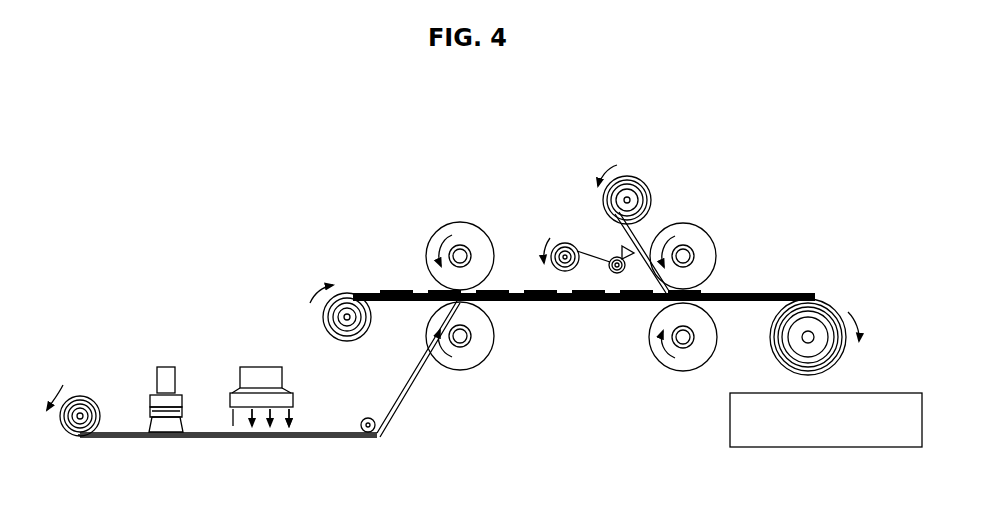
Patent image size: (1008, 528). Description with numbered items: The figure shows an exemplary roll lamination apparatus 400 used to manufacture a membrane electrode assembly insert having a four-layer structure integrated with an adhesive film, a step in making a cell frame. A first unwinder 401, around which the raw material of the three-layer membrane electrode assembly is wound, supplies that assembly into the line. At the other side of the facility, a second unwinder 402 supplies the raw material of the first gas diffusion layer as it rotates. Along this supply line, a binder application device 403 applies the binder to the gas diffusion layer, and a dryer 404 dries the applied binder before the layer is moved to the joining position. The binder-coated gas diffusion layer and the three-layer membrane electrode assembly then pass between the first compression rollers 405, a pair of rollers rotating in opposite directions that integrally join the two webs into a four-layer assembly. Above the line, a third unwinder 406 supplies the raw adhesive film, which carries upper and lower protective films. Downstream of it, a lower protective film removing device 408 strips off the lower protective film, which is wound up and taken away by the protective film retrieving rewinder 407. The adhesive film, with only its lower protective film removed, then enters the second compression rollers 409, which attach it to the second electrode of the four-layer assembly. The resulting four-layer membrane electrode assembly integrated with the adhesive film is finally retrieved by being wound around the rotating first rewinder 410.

The roll lamination apparatus 400 is at (195, 265).
The first unwinder 401 is at (347, 343).
The second unwinder 402 is at (68, 433).
The binder application device 403 is at (165, 365).
The dryer 404 is at (260, 366).
The first compression rollers 405 is at (437, 227).
The third unwinder 406 is at (634, 178).
The protective film retrieving rewinder 407 is at (560, 243).
The lower protective film removing device 408 is at (621, 247).
The second compression rollers 409 is at (700, 225).
The first rewinder 410 is at (830, 300).